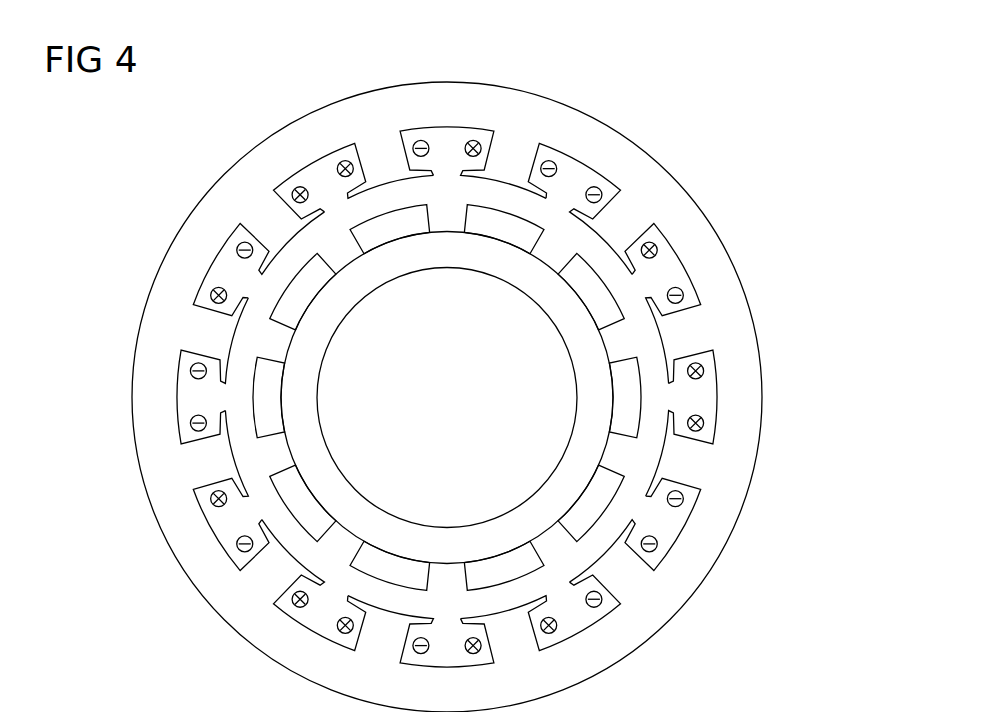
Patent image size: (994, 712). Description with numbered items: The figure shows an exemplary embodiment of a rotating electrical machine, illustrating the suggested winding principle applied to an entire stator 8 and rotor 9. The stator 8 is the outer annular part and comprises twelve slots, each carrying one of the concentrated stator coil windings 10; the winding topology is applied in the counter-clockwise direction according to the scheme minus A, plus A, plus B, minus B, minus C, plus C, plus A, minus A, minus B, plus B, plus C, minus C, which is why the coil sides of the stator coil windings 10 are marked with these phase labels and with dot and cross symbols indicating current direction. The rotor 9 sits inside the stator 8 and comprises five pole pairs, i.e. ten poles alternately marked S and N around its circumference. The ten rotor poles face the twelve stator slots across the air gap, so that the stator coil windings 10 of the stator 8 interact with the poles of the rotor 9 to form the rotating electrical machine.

The stator 8 is at (720, 268).
The rotor 9 is at (437, 420).
The stator coil windings (no numeral drawn on this sheet; group added for the three- 10 is at (447, 397).